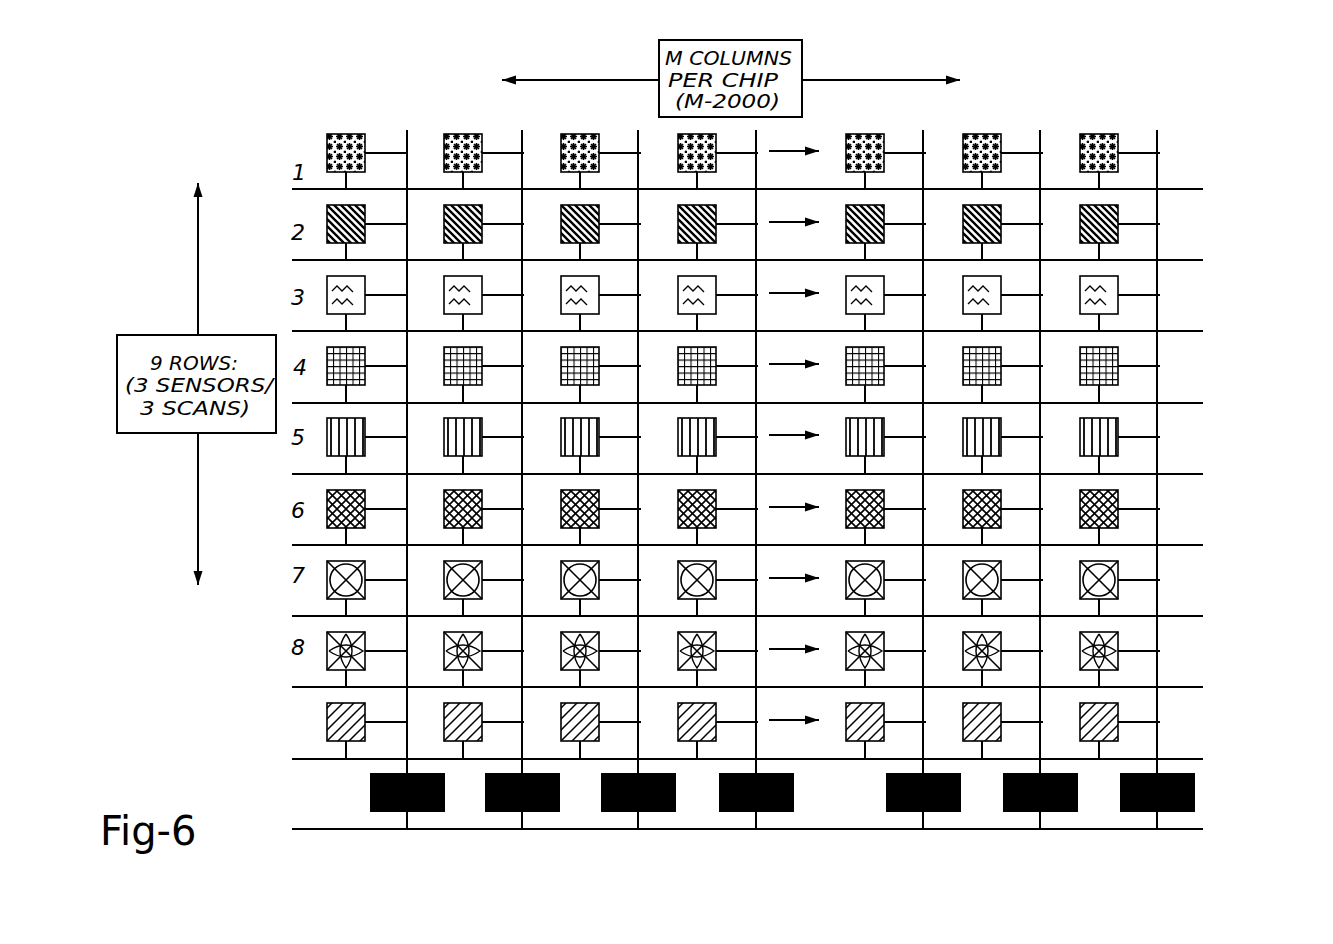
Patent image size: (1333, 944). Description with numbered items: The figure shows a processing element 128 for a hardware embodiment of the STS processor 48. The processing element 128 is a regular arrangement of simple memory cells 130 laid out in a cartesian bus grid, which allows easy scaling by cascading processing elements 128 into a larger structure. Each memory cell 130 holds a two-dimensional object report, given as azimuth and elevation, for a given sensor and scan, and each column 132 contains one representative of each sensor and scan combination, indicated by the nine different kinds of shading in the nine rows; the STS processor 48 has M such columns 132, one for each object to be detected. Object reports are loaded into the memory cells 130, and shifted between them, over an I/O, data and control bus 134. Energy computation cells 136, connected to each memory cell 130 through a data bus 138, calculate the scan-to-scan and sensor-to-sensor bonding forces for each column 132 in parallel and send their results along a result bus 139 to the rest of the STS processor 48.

The STS processor 48 is at (1264, 172).
The processing element 128 is at (1032, 103).
The memory cell 130 is at (324, 146).
The column 132 is at (345, 126).
The I/O, data and control bus 134 is at (1189, 539).
The energy computation cell 136 is at (355, 795).
The data bus 138 is at (1162, 306).
The result bus 139 is at (948, 831).